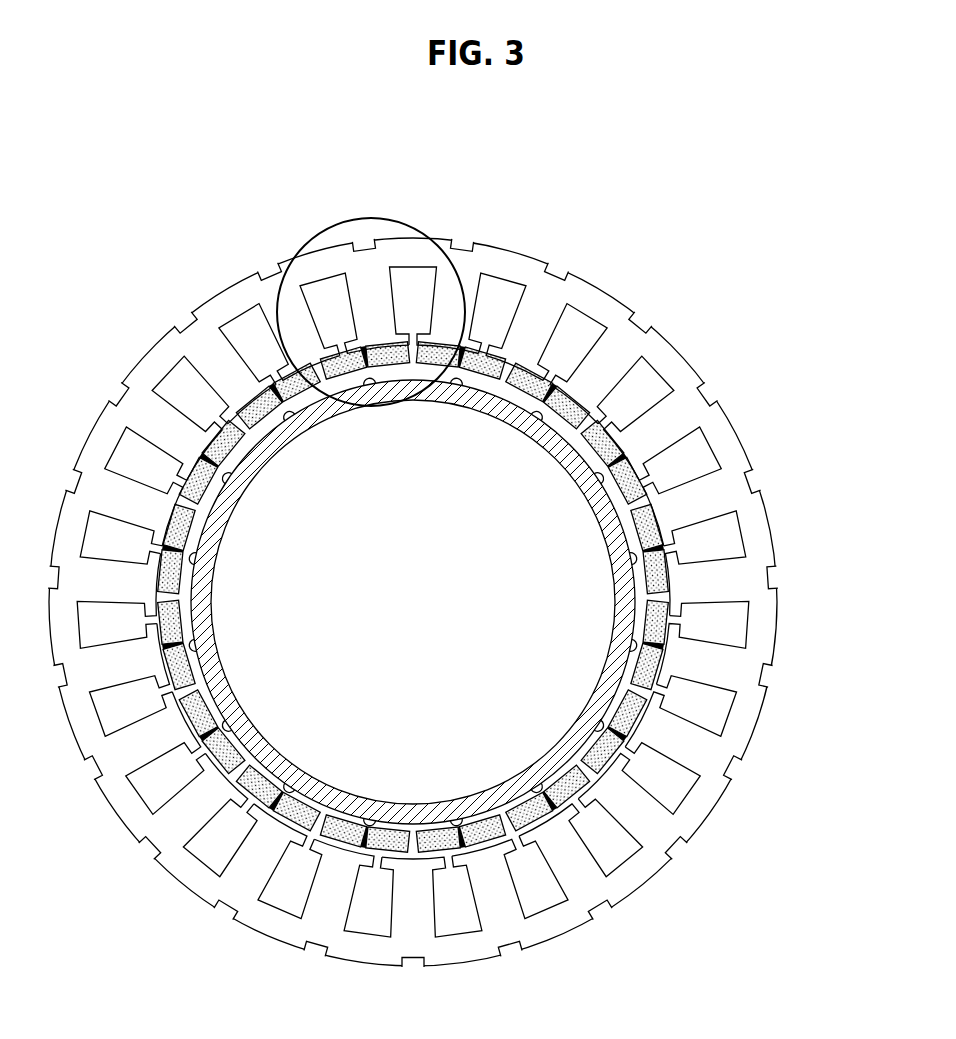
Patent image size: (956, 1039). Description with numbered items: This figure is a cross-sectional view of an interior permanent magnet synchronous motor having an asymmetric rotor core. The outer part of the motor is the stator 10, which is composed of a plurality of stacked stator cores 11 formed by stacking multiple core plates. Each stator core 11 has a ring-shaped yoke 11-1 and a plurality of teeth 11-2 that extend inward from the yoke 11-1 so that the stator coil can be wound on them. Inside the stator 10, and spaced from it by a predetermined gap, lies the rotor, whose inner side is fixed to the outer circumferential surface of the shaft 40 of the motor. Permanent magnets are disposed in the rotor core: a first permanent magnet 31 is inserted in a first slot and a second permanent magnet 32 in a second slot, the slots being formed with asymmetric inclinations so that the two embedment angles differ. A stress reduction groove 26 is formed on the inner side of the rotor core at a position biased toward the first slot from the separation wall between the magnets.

The stator 10 is at (622, 276).
The stator core 11 is at (678, 334).
The ring-shaped yoke 11-1 is at (727, 452).
The teeth 11-2 is at (653, 433).
The stress reduction groove 26 is at (370, 385).
The first permanent magnet 31 is at (336, 378).
The second permanent magnet 32 is at (398, 366).
The shaft 40 is at (253, 463).